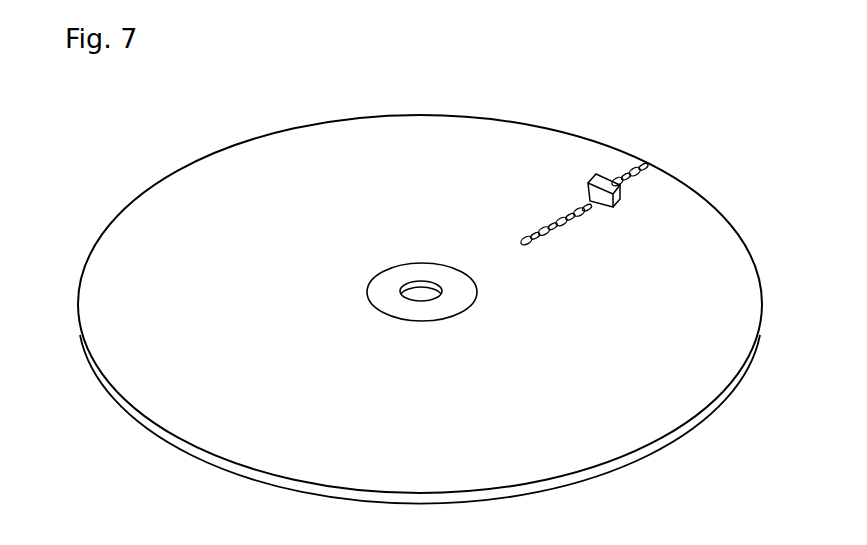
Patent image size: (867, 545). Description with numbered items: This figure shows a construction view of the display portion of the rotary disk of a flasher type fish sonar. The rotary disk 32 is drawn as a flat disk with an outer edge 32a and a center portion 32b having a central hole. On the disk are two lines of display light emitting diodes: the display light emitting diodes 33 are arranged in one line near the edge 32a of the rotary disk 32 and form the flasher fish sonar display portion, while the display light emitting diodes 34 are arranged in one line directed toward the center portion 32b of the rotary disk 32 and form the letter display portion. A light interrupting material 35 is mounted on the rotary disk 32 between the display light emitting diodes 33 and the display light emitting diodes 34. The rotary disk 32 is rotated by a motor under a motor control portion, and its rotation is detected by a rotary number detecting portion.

The rotary disk 32 is at (173, 180).
The edge of the rotary disk 32a is at (693, 432).
The center portion of the rotary disk 32b is at (427, 290).
The display light emitting diodes 33 is at (645, 165).
The display light emitting diodes 34 is at (568, 225).
The light interrupting material 35 is at (617, 207).